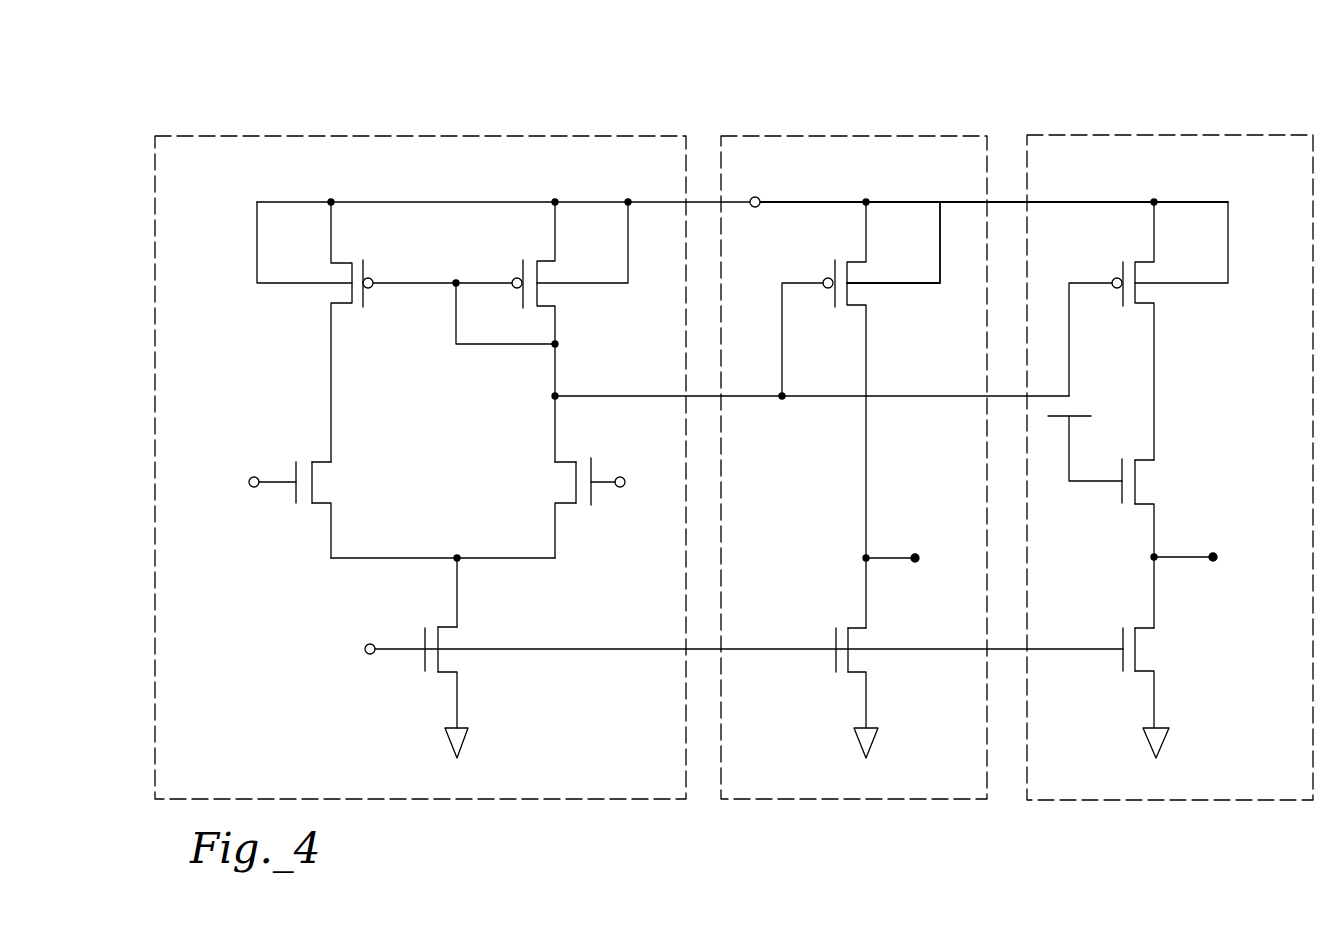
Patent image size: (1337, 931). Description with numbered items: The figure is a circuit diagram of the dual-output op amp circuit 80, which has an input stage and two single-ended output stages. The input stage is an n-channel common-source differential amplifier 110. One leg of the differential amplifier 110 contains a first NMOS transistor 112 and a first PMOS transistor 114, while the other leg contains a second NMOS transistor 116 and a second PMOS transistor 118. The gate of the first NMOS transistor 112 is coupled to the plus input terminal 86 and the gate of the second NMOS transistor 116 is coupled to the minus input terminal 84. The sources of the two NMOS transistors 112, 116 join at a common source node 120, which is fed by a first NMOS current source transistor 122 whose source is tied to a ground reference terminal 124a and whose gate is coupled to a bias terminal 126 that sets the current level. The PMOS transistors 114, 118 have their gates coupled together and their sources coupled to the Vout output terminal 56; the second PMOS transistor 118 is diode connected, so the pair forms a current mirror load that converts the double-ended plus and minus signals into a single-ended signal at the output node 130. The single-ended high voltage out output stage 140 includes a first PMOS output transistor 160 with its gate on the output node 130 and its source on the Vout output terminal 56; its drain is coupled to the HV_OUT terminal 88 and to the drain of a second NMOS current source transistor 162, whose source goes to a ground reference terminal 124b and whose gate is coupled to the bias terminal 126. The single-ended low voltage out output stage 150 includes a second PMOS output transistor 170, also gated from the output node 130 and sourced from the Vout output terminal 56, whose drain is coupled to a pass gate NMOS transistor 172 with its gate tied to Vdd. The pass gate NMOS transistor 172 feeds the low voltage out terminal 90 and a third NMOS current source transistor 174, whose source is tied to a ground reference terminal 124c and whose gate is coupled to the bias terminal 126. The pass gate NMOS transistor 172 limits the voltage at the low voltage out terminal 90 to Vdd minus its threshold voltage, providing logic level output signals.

The dual-output op amp circuit 80 is at (1262, 50).
The n-channel common-source differential amplifier 110 is at (415, 118).
The single-ended high voltage out output stage 140 is at (897, 117).
The single-ended low voltage out output stage 150 is at (1150, 125).
The Vout output terminal 56 is at (757, 197).
The first PMOS transistor 114 is at (330, 297).
The second PMOS transistor 118 is at (556, 294).
The output node 130 is at (557, 394).
The first NMOS transistor 112 is at (328, 488).
The second NMOS transistor 116 is at (558, 486).
The plus input terminal 86 is at (255, 477).
The minus input terminal 84 is at (622, 477).
The common source node 120 is at (457, 553).
The first NMOS current source transistor 122 is at (452, 640).
The bias terminal 126 is at (371, 644).
The ground reference terminal 124a is at (470, 744).
The ground reference terminal 124b is at (858, 749).
The ground reference terminal 124c is at (1148, 749).
The first PMOS output transistor 160 is at (868, 294).
The second NMOS current source transistor 162 is at (862, 640).
The HV_OUT terminal 88 is at (916, 554).
The second PMOS output transistor 170 is at (1155, 294).
The pass gate NMOS transistor 172 is at (1150, 487).
The third NMOS current source transistor 174 is at (1150, 652).
The low voltage out terminal 90 is at (1214, 553).